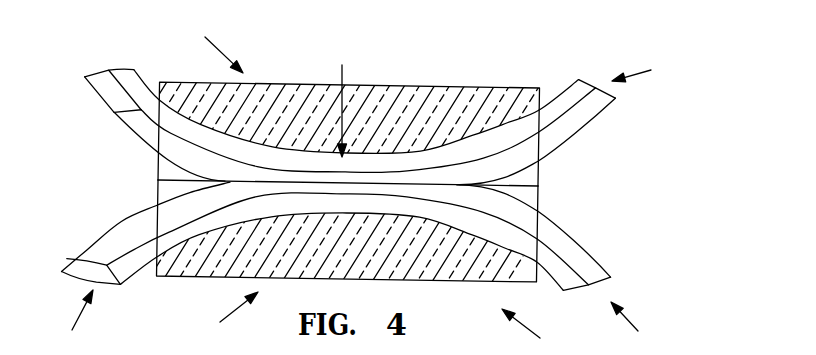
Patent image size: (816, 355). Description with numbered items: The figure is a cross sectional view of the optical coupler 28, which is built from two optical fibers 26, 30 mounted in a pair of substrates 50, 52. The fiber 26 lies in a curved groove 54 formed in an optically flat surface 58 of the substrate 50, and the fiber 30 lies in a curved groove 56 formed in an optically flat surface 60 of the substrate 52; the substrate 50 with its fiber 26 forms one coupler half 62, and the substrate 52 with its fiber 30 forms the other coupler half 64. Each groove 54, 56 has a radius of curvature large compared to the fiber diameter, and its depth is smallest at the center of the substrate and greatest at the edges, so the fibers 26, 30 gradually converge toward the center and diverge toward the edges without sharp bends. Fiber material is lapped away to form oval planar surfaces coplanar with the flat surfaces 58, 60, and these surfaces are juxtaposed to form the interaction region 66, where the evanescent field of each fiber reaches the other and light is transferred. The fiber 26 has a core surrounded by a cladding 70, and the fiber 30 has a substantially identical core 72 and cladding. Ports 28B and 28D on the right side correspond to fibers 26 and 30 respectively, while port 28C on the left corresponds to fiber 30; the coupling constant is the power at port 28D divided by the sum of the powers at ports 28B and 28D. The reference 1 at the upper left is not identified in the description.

The strip assembly 1 is at (107, 72).
The optical fiber 26 is at (553, 142).
The optical coupler 28 is at (226, 323).
The port 28B is at (655, 72).
The port 28C is at (74, 322).
The port 28D is at (644, 328).
The optical fiber 30 is at (133, 279).
The substrate 50 is at (427, 86).
The substrate 52 is at (441, 283).
The curved groove 54 is at (538, 95).
The curved groove 56 is at (167, 247).
The optically flat surface 58 is at (519, 186).
The optically flat surface 60 is at (178, 182).
The coupler half 62 is at (215, 44).
The coupler half 64 is at (535, 332).
The interaction region 66 is at (335, 100).
The cladding 70 is at (115, 113).
The core 72 is at (70, 262).